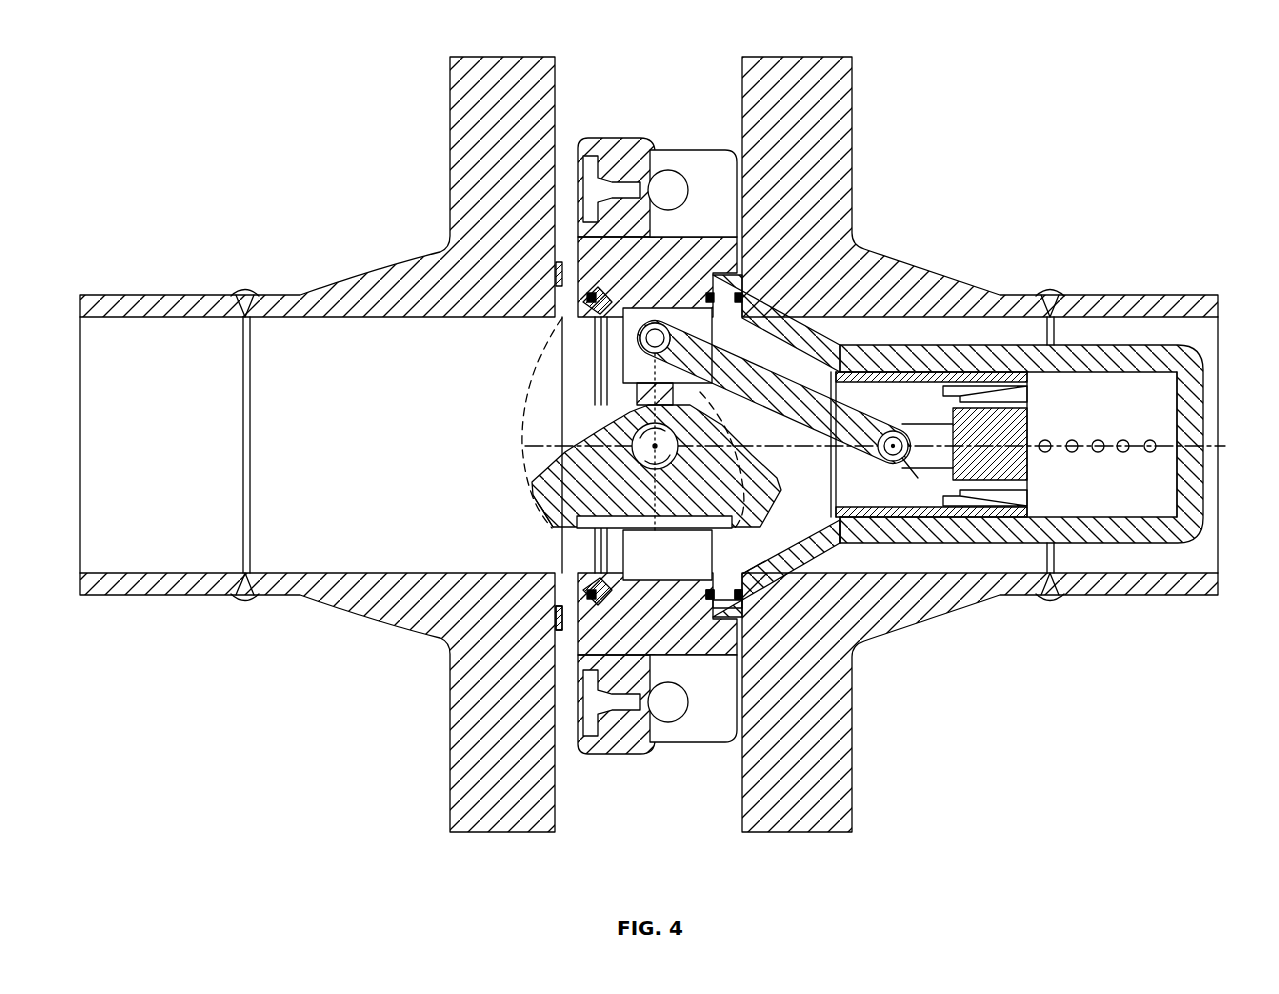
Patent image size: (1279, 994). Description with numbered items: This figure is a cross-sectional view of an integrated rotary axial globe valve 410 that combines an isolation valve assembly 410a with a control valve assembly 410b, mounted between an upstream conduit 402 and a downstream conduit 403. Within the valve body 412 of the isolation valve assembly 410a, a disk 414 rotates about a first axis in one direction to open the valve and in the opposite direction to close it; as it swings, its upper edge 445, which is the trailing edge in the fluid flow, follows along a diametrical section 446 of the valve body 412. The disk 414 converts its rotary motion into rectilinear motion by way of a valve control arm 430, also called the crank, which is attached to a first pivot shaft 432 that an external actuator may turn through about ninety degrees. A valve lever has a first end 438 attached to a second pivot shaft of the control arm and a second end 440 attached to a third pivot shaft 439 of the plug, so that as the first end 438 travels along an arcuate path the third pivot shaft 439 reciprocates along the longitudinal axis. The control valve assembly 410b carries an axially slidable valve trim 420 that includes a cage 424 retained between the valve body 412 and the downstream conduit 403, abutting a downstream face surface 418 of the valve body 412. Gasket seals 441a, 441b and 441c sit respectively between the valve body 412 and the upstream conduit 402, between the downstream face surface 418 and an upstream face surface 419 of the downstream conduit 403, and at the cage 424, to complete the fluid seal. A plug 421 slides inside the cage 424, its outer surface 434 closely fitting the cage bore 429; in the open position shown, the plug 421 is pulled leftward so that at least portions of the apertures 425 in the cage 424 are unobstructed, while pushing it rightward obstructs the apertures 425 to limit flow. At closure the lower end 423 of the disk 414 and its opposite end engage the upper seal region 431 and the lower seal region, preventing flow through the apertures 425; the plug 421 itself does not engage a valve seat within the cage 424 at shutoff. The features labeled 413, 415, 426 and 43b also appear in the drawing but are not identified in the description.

The integrated rotary axial globe valve 410 is at (246, 58).
The isolation valve assembly 410a is at (606, 88).
The control valve assembly 410b is at (1067, 228).
The upstream conduit 402 is at (278, 597).
The downstream conduit 403 is at (1145, 596).
The valve body 412 is at (617, 757).
The seat ring 413 is at (550, 420).
The disk 414 is at (590, 435).
The lower support cone 415 is at (818, 567).
The downstream face surface of the valve body 418 is at (722, 617).
The upstream face surface of the downstream conduit 419 is at (745, 628).
The axially slidable valve trim 420 is at (890, 330).
The valve plug 421 is at (975, 482).
The lower end of the disk 423 is at (852, 630).
The cage 424 is at (990, 512).
The apertures 425 is at (1150, 440).
The stem 426 is at (590, 333).
The cage bore 429 is at (1085, 520).
The valve control arm 430 is at (632, 372).
The upper seal region 431 is at (587, 307).
The first pivot shaft 432 is at (592, 597).
The outer surface of the valve plug 434 is at (878, 603).
The first end of the valve lever 438 is at (657, 332).
The third pivot shaft 439 is at (930, 470).
The second end of the valve lever 440 is at (908, 350).
The gasket seal 441a is at (710, 600).
The gasket seal 441b is at (842, 645).
The gasket seal 441c is at (560, 625).
The upper edge of the disk 445 is at (548, 483).
The diametrical section of the valve body 446 is at (540, 362).
The upper support cone 43b is at (850, 275).